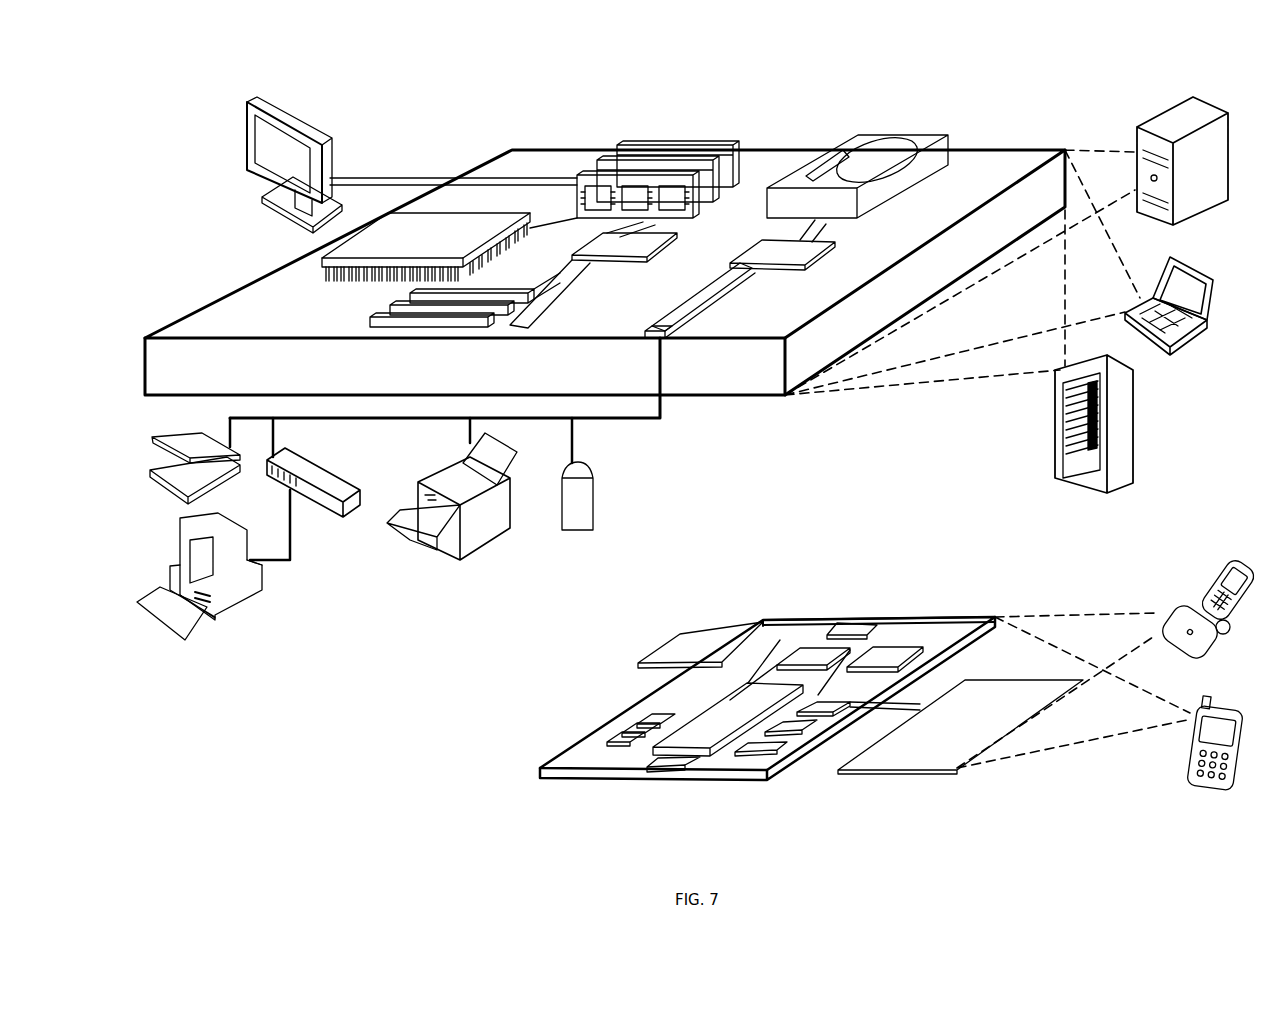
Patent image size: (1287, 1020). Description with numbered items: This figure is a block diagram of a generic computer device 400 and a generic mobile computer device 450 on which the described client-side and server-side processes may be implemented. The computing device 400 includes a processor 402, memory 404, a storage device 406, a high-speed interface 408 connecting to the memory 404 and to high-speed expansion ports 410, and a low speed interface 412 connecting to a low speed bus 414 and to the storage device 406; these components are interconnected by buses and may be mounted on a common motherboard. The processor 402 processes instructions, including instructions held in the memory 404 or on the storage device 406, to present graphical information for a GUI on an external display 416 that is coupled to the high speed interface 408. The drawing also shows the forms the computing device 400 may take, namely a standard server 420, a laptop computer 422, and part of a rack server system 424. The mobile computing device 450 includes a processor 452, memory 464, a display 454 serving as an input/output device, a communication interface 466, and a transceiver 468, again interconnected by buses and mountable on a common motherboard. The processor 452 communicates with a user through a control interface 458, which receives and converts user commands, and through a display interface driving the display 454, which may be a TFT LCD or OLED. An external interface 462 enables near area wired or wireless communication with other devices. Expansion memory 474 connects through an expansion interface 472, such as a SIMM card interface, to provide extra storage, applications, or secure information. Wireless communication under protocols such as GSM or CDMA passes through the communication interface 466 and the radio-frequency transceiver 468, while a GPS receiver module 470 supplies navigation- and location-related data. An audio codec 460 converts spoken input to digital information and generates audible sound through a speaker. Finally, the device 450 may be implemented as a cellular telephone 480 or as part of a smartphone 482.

The computing device 400 is at (443, 122).
The processor 402 is at (322, 260).
The memory 404 is at (637, 152).
The storage device 406 is at (853, 131).
The high-speed interface 408 is at (603, 246).
The high-speed expansion ports 410 is at (390, 308).
The low speed interface 412 is at (783, 252).
The low speed bus 414 is at (668, 337).
The display 416 is at (243, 108).
The standard server 420 is at (1138, 134).
The laptop computer 422 is at (1168, 263).
The rack server system 424 is at (1055, 447).
The mobile computer device 450 is at (747, 596).
The processor 452 is at (710, 752).
The display 454 is at (957, 770).
The control interface 458 is at (807, 733).
The audio codec 460 is at (823, 712).
The external interface 462 is at (670, 770).
The memory 464 is at (623, 732).
The communication interface 466 is at (817, 656).
The transceiver 468 is at (888, 655).
The GPS receiver module 470 is at (848, 618).
The expansion interface 472 is at (748, 632).
The expansion memory 474 is at (683, 633).
The cellular telephone 480 is at (1220, 563).
The smartphone 482 is at (1200, 695).